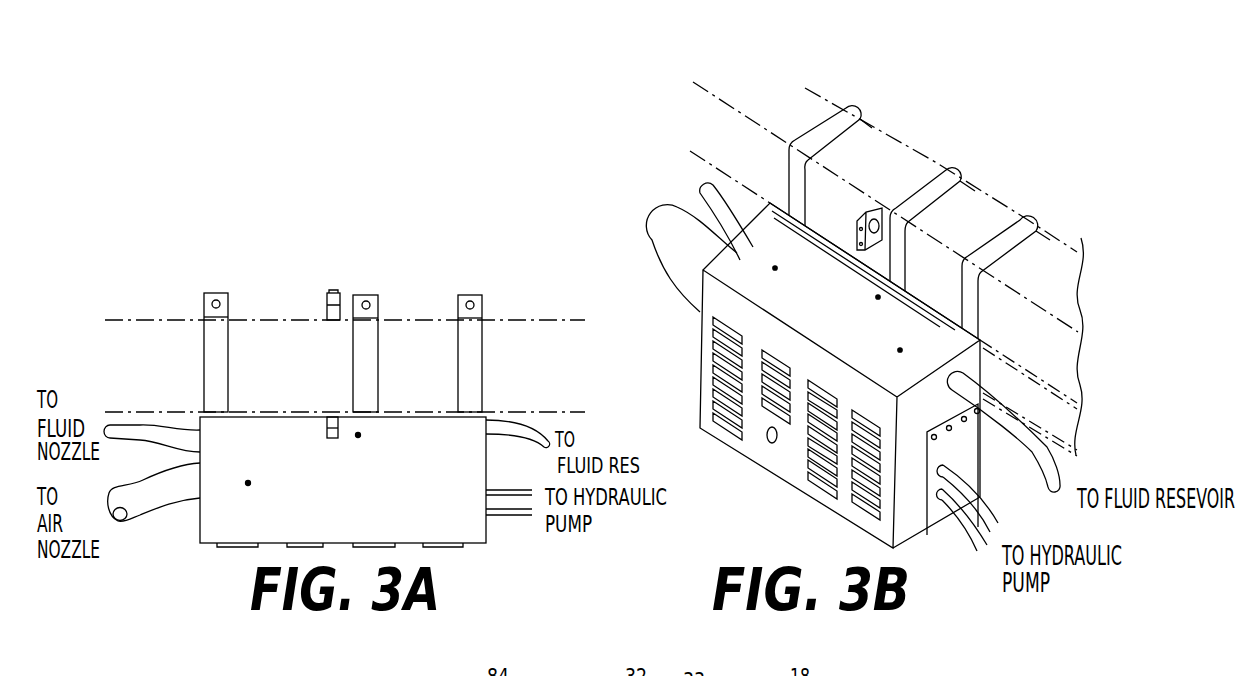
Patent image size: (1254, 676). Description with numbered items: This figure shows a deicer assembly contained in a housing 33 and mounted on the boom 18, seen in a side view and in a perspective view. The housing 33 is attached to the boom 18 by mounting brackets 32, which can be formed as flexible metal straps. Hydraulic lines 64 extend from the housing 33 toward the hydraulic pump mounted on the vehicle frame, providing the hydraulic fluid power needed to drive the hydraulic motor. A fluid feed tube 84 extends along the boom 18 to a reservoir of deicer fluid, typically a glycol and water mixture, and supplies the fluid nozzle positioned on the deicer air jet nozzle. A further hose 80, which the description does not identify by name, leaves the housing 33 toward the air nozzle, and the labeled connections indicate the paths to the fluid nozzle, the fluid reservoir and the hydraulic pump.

In FIG. 3A, the boom 18 is at (267, 340).
In FIG. 3B, the boom 18 is at (978, 202).
In FIG. 3A, the mounting brackets 32 is at (220, 313).
In FIG. 3B, the mounting brackets 32 is at (965, 170).
In FIG. 3A, the control box 33 is at (338, 494).
In FIG. 3B, the control box 33 is at (843, 311).
In FIG. 3A, the hydraulic lines 64 is at (500, 497).
In FIG. 3B, the hydraulic lines 64 is at (974, 500).
In FIG. 3A, the air hose 80 is at (132, 513).
In FIG. 3B, the air hose 80 is at (663, 227).
In FIG. 3A, the fluid feed tube 84 is at (138, 430).
In FIG. 3B, the fluid feed tube 84 is at (713, 192).